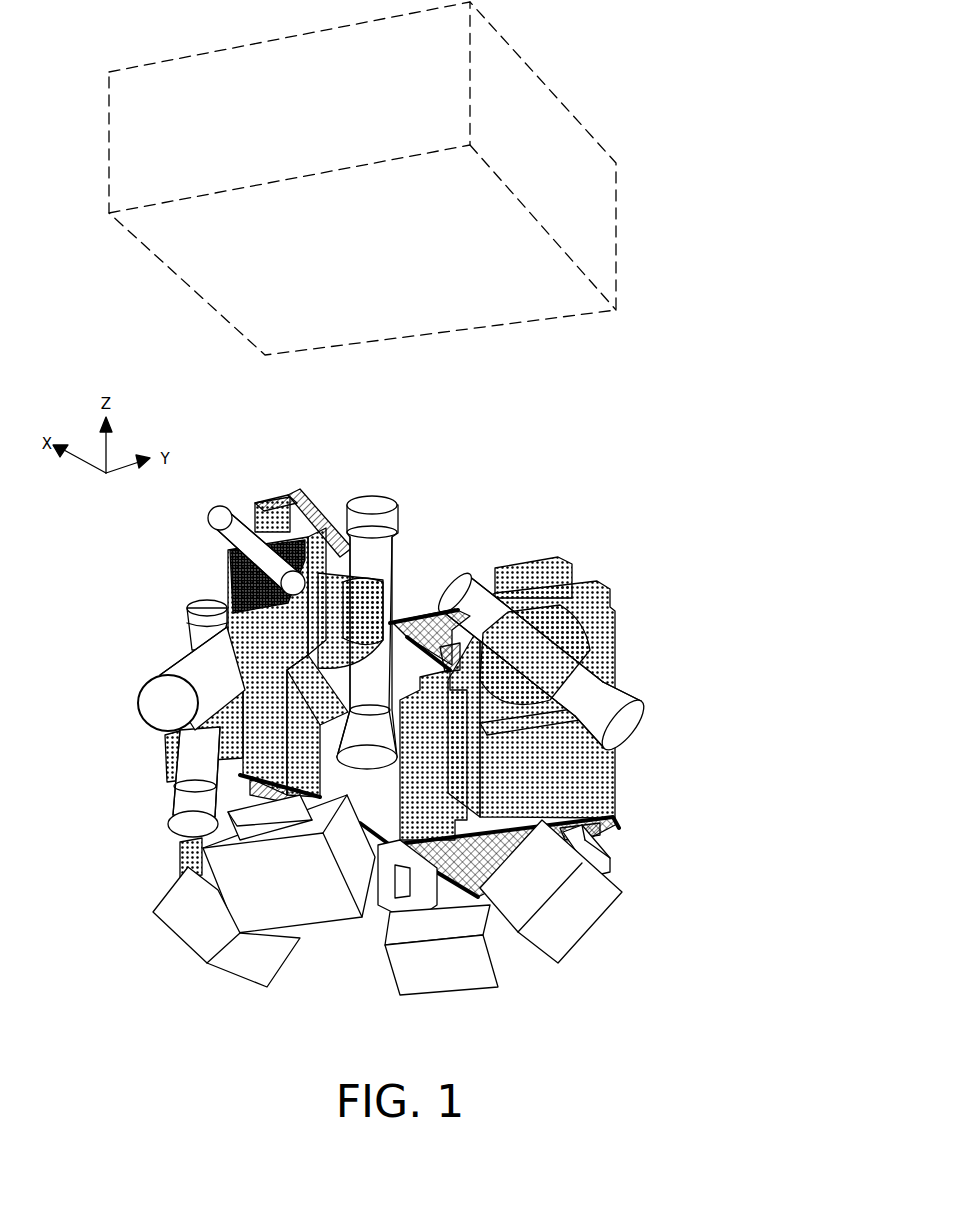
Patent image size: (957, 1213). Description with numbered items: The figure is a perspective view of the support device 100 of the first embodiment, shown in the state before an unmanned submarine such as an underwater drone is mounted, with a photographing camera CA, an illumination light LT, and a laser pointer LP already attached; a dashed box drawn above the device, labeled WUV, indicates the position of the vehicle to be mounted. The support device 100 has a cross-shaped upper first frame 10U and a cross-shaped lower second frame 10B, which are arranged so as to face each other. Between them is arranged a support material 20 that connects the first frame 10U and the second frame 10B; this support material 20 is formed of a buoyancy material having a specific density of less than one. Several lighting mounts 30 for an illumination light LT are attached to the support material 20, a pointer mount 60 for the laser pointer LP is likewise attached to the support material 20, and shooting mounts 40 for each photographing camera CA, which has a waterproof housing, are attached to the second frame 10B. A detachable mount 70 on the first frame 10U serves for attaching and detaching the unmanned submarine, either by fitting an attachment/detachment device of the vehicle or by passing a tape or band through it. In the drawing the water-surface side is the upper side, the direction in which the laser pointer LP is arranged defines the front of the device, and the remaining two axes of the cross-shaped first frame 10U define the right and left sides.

The support device 100 is at (703, 527).
The first frame 10U is at (433, 609).
The second frame 10B is at (429, 892).
The support material 20 is at (405, 664).
The lighting mount 30 is at (349, 617).
The shooting mount 40 is at (392, 851).
The pointer mount 60 is at (228, 576).
The detachable mount 70 is at (263, 495).
The illumination light LT is at (385, 666).
The laser pointer LP is at (240, 544).
The photographing camera CA is at (372, 895).
The work unit volume WUV is at (362, 178).